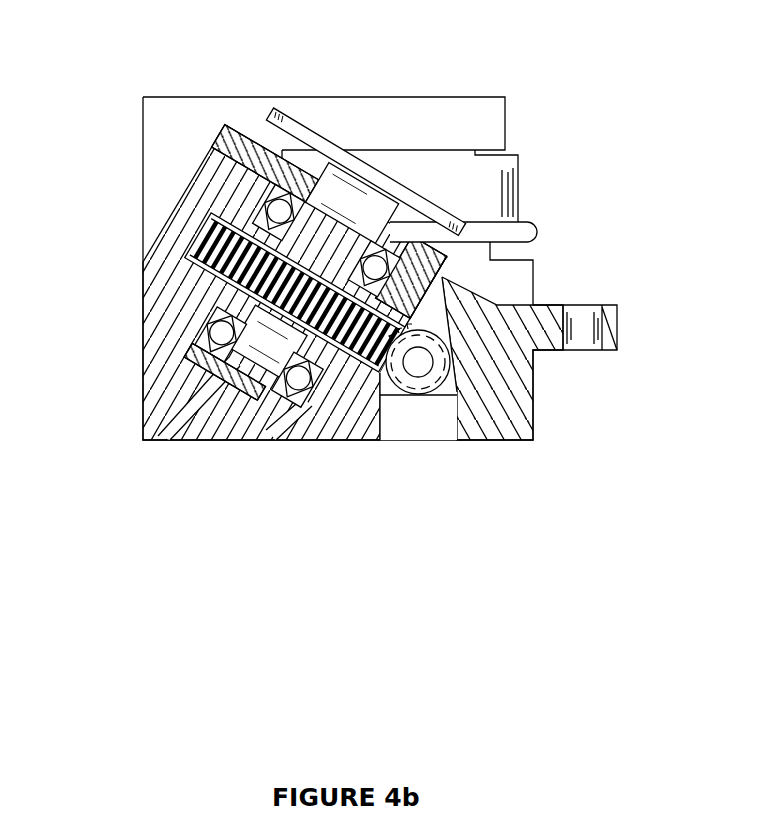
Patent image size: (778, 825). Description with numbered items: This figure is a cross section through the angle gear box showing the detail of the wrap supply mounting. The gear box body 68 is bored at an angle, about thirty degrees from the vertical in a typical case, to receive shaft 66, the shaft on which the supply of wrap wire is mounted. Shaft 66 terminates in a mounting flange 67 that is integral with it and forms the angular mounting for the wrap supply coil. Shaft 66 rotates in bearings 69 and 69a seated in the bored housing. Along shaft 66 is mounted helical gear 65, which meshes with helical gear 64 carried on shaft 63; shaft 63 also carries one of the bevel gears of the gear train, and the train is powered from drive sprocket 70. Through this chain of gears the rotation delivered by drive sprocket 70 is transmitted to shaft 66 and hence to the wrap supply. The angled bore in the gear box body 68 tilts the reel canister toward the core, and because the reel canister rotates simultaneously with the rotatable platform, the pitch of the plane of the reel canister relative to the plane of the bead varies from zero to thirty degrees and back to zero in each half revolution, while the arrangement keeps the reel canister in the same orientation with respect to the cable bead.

The shaft 63 is at (412, 374).
The helical gear 64 is at (420, 405).
The helical gear 65 is at (175, 241).
The shaft 66 is at (242, 394).
The mounting flange 67 is at (427, 178).
The gear box body 68 is at (536, 395).
The bearing 69 is at (185, 325).
The bearing 69a is at (250, 191).
The drive sprocket 70 is at (540, 232).